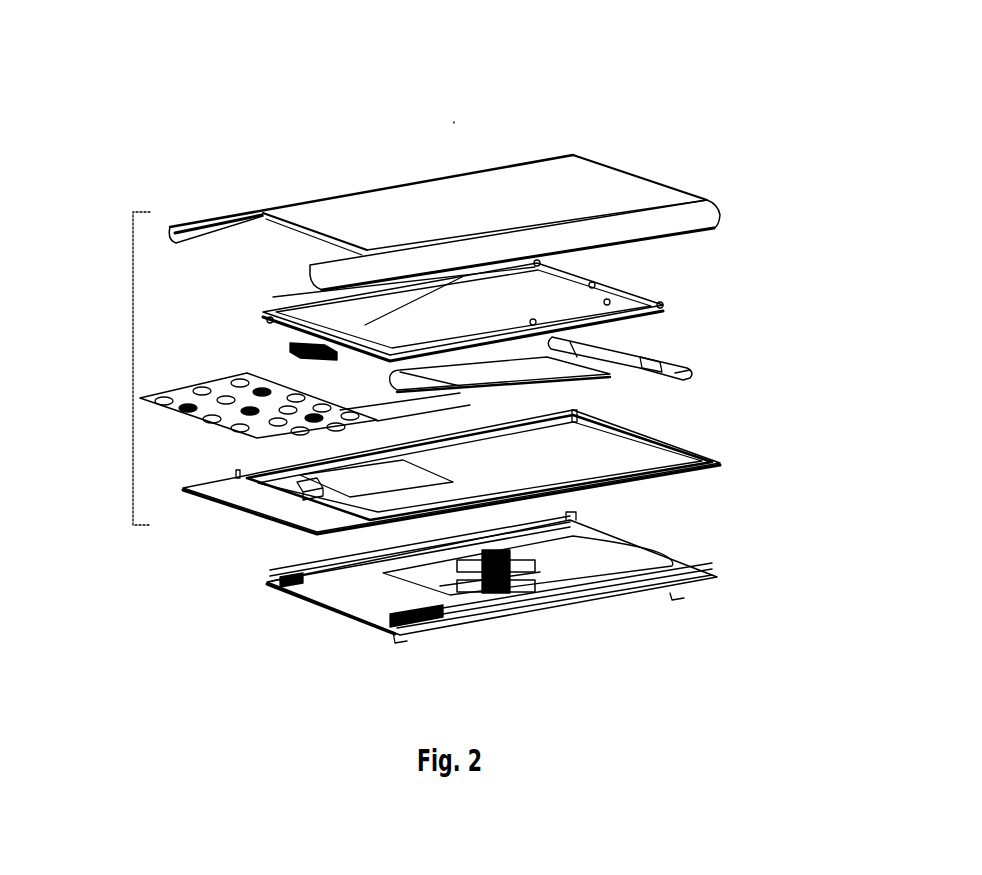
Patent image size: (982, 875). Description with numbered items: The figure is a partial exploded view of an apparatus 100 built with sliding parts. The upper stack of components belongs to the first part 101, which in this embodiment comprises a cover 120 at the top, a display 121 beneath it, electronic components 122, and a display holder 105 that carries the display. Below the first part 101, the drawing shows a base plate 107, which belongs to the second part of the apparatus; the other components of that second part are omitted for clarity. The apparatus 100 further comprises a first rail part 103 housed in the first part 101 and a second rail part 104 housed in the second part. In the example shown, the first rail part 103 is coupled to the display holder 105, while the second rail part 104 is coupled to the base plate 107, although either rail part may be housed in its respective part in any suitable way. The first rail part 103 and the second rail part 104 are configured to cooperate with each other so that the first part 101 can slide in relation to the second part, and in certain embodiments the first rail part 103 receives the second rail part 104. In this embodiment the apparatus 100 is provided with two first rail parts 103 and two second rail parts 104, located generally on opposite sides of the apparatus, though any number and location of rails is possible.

The apparatus 100 is at (454, 122).
The first part 101 is at (133, 367).
The cover 120 is at (557, 193).
The display 121 is at (560, 297).
The electronic components 122 is at (535, 371).
The first rail part 103 is at (235, 468).
The display holder 105 is at (610, 458).
The second rail part 104 is at (285, 566).
The base plate 107 is at (370, 603).